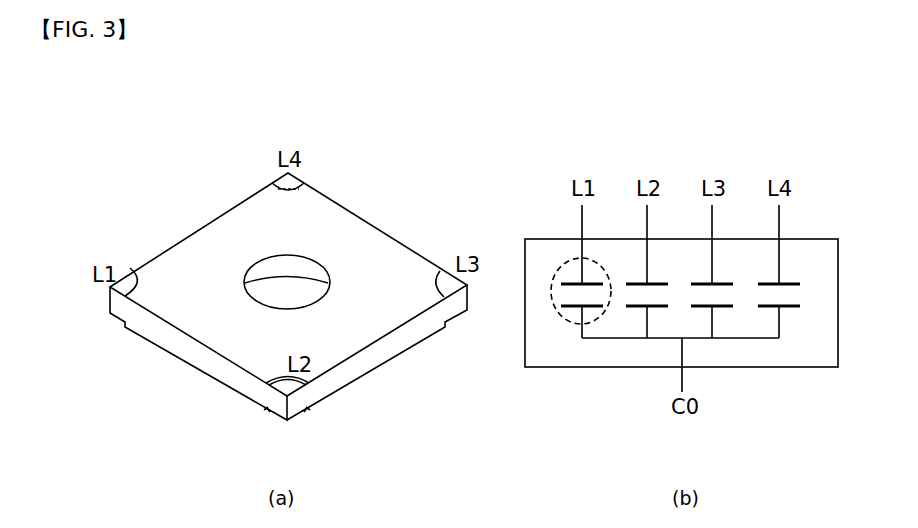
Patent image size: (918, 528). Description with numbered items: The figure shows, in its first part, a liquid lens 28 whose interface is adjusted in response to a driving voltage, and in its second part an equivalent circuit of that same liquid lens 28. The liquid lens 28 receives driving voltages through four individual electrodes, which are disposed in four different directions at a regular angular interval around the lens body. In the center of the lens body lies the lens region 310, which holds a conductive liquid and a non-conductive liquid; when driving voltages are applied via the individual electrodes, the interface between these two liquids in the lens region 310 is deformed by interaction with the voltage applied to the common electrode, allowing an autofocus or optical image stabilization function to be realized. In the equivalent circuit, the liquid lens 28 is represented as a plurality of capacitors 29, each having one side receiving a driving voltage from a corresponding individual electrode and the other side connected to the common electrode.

The liquid lens 28 is at (220, 341).
The capacitors 29 is at (562, 266).
The lens region 310 is at (287, 284).